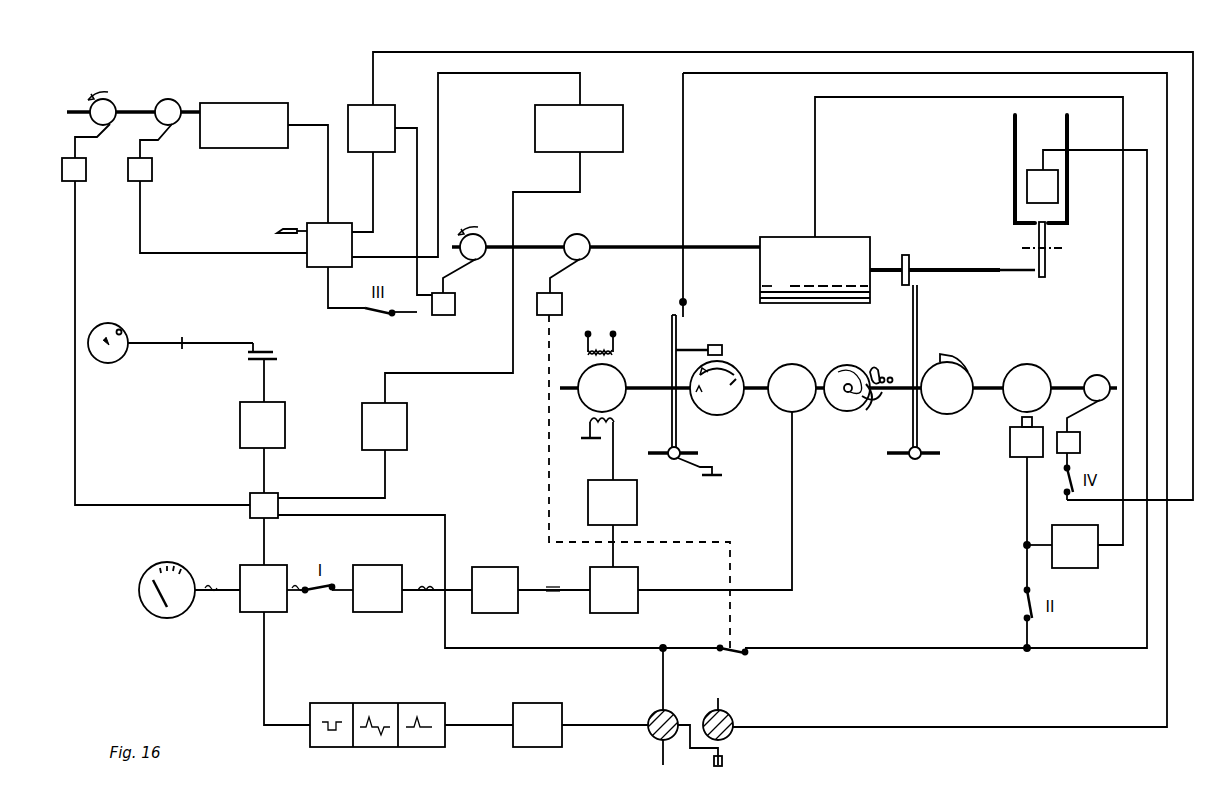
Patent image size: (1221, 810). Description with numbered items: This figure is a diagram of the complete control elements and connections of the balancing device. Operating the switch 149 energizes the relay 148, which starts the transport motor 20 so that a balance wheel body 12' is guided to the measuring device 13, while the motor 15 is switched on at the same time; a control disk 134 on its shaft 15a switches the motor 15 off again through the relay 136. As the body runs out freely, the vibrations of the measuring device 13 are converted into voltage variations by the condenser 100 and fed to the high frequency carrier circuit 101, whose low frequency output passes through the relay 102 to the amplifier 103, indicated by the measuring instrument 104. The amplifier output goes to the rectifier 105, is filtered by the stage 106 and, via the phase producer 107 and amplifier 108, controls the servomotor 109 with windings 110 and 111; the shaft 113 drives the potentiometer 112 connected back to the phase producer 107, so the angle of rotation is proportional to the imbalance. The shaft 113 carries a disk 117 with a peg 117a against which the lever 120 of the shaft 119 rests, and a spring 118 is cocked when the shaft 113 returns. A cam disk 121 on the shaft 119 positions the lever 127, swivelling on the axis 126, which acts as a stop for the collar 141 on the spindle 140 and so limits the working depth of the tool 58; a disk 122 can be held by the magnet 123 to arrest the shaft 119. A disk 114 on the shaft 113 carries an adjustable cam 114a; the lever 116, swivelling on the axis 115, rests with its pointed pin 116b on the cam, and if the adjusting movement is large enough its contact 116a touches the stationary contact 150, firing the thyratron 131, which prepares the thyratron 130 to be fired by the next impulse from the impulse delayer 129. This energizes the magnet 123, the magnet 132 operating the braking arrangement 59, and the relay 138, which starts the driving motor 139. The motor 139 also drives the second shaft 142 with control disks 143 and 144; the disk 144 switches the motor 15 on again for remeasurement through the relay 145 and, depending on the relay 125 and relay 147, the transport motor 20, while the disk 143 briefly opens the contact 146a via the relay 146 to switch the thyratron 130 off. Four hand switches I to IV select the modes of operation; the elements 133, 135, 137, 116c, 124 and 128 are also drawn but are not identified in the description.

The coupling on drive shaft 133 is at (110, 100).
The shaft 15a is at (143, 110).
The control disk 134 is at (176, 100).
The motor 15 is at (244, 125).
The control unit 135 is at (80, 172).
The relay 136 is at (146, 172).
The switch 149 is at (290, 228).
The relay 148 is at (329, 245).
The relay 147 is at (371, 128).
The transport motor 20 is at (579, 128).
The control circuit 137 is at (384, 426).
The relay 145 is at (455, 304).
The second shaft 142 is at (712, 245).
The control disk 144 is at (480, 237).
The control disk 143 is at (584, 236).
The relay 146 is at (556, 303).
The contact 146a is at (738, 642).
The stationary contact 150 is at (688, 305).
The driving motor 139 is at (815, 270).
The spindle 140 is at (945, 265).
The collar 141 is at (905, 253).
The tool 58 is at (1030, 276).
The braking arrangement 59 is at (1013, 194).
The magnet 132 is at (1042, 186).
The balance wheel body 12' is at (586, 292).
The measuring device 13 is at (180, 335).
The condenser 100 is at (277, 357).
The high frequency carrier circuit 101 is at (262, 425).
The relay 102 is at (276, 494).
The shaft 113 is at (652, 395).
The servomotor 109 is at (616, 378).
The winding 111 is at (598, 342).
The winding 110 is at (588, 430).
The amplifier 108 is at (612, 502).
The phase producer 107 is at (614, 590).
The lever 116 is at (662, 334).
The contact arm 116a is at (672, 312).
The lever arm 116c is at (712, 348).
The pointed pin 116b is at (722, 350).
The axis 115 is at (670, 462).
The disk 114 is at (713, 414).
The cam 114a is at (692, 444).
The potentiometer 112 is at (780, 406).
The disk 117 is at (851, 365).
The lever 120 is at (880, 370).
The peg 117a is at (880, 400).
The spring 118 is at (866, 410).
The lever 127 is at (920, 325).
The axis 126 is at (906, 460).
The shaft 119 is at (972, 380).
The cam disk 121 is at (952, 412).
The disk 122 is at (1037, 374).
The coupling 124 is at (1097, 376).
The relay 125 is at (1080, 441).
The magnet 123 is at (1010, 455).
The relay 138 is at (1075, 546).
The measuring instrument 104 is at (186, 606).
The amplifier 103 is at (263, 588).
The rectifier 105 is at (377, 588).
The filter stage 106 is at (495, 590).
The pulse shaper 128 is at (358, 703).
The impulse delayer 129 is at (537, 725).
The thyratron 130 is at (652, 713).
The thyratron 131 is at (730, 713).